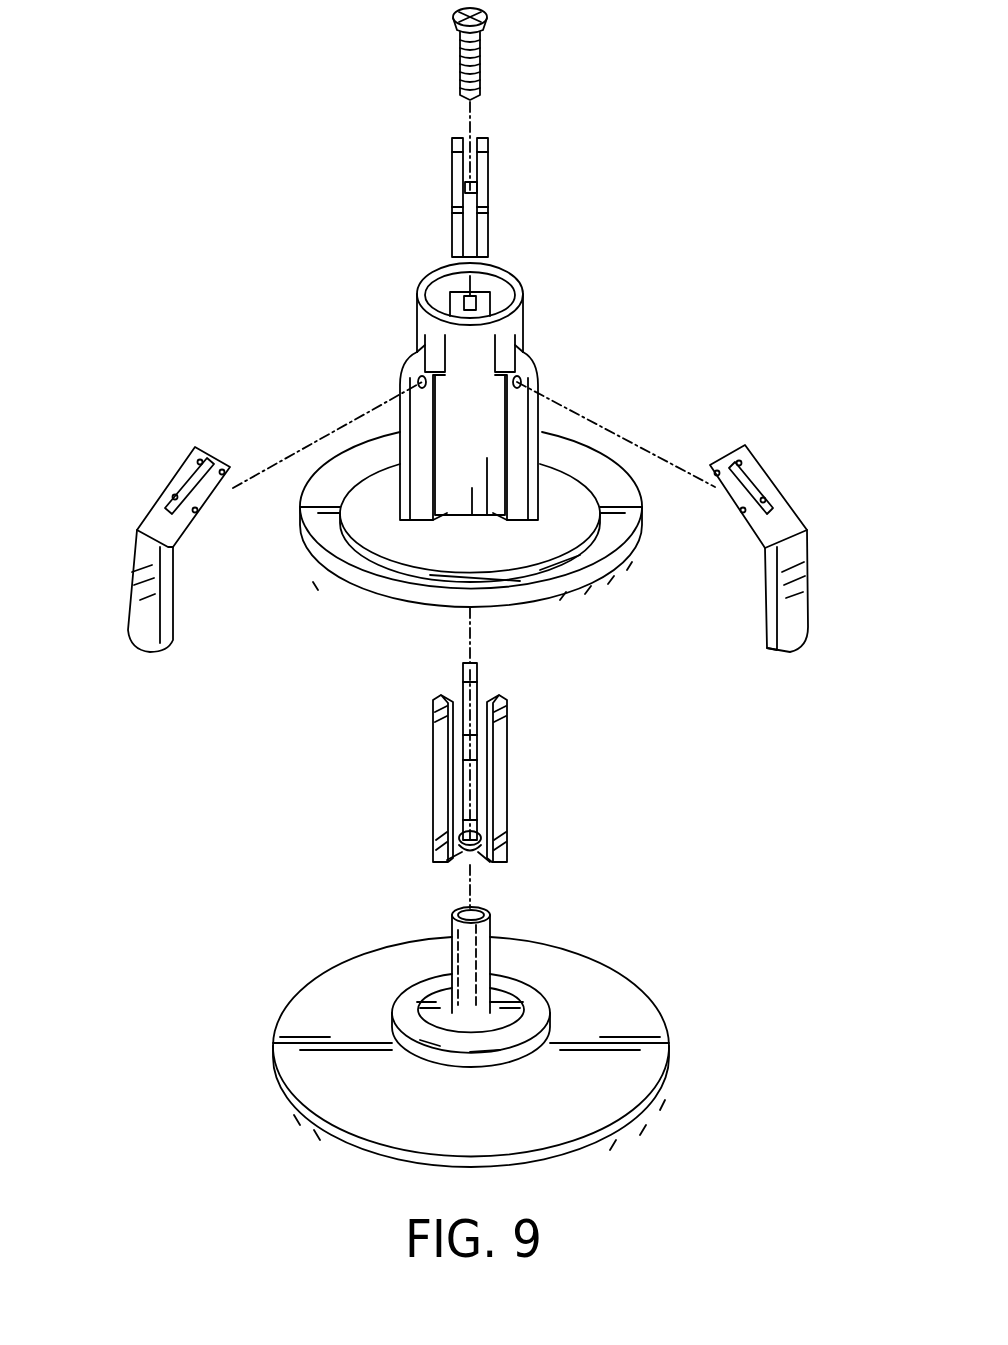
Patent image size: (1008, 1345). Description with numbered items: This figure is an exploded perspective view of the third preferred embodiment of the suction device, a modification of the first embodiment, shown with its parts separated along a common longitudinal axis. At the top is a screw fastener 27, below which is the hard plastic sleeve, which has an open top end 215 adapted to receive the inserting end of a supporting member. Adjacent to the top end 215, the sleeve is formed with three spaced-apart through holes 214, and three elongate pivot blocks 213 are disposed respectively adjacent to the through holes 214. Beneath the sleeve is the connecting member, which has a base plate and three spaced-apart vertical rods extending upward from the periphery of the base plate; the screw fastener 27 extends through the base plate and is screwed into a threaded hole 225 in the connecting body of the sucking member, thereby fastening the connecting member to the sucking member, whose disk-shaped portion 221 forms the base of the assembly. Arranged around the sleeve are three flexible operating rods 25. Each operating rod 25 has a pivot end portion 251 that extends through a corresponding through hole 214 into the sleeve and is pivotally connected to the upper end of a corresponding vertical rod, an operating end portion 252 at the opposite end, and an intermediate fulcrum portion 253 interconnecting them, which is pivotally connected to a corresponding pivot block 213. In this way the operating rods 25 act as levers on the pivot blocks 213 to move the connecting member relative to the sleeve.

The screw fastener 27 is at (481, 55).
The operating rods 25 is at (457, 200).
The top end 215 is at (492, 286).
The through holes 214 is at (430, 348).
The pivot blocks 213 is at (422, 500).
The pivot end portions 251 is at (716, 466).
The intermediate fulcrum portions 253 is at (775, 492).
The operating end portions 252 is at (788, 519).
The threaded hole 225 is at (478, 912).
The disk 221 is at (669, 1043).